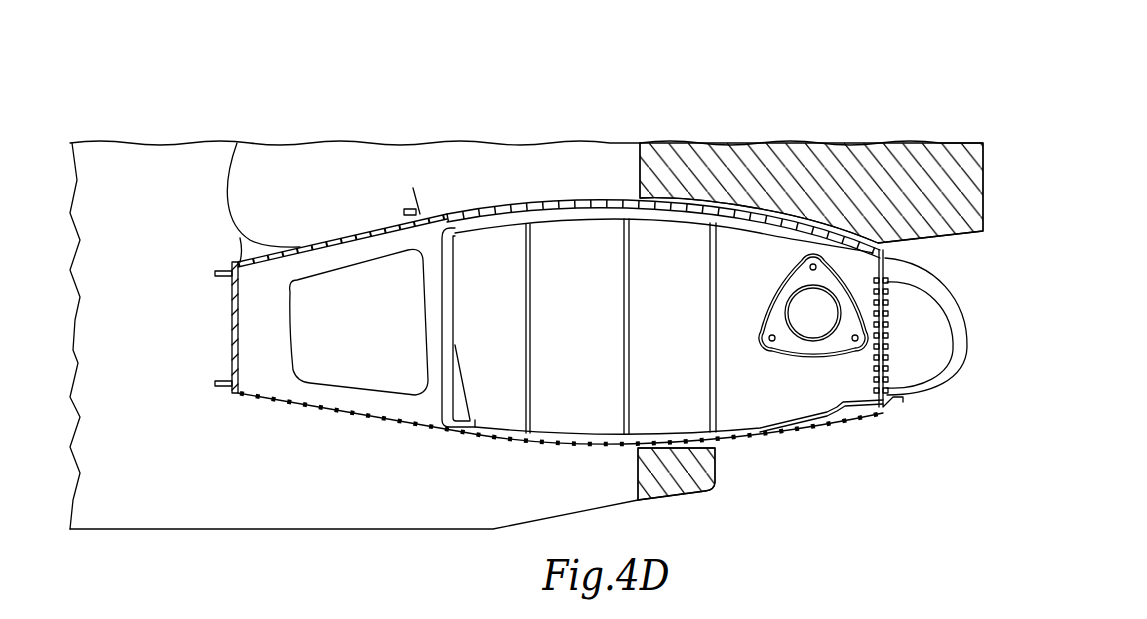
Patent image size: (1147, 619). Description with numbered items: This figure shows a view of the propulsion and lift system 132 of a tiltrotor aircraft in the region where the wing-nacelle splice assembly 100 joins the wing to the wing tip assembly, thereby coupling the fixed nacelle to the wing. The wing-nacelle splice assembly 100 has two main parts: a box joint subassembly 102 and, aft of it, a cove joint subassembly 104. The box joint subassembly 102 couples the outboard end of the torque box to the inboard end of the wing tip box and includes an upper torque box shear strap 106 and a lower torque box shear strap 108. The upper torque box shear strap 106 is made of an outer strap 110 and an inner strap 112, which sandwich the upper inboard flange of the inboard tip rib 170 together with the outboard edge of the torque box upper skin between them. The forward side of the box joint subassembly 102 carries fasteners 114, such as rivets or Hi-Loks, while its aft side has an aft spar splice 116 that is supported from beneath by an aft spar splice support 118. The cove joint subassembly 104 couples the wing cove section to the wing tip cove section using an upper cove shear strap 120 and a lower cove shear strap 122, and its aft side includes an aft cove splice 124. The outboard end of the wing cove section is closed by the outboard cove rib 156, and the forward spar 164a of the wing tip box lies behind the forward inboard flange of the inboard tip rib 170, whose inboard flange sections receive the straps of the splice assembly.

The wing-nacelle splice assembly 100 is at (287, 238).
The box joint subassembly 102 is at (532, 194).
The cove joint subassembly 104 is at (318, 235).
The upper torque box shear strap 106 is at (588, 198).
The lower torque box shear strap 108 is at (511, 444).
The outer strap 110 is at (621, 208).
The inner strap 112 is at (620, 204).
The fasteners 114 is at (887, 313).
The aft spar splice 116 is at (445, 290).
The aft spar splice support 118 is at (445, 435).
The upper cove shear strap 120 is at (363, 228).
The lower cove shear strap 122 is at (318, 412).
The aft cove splice 124 is at (233, 333).
The propulsion and lift system 132 is at (773, 75).
The outboard cove rib 156 is at (280, 328).
The forward spar 164a is at (887, 353).
The inboard tip rib 170 is at (668, 235).